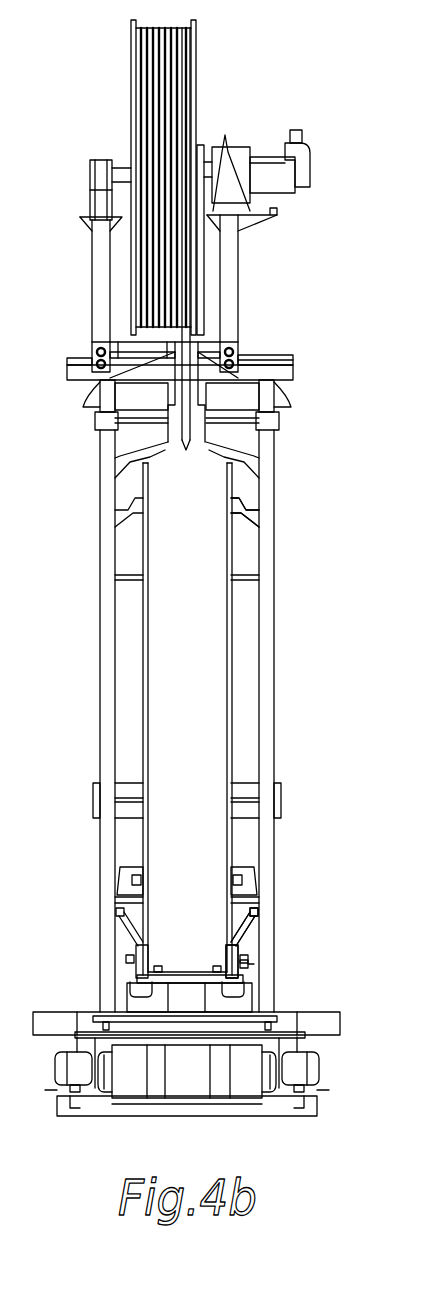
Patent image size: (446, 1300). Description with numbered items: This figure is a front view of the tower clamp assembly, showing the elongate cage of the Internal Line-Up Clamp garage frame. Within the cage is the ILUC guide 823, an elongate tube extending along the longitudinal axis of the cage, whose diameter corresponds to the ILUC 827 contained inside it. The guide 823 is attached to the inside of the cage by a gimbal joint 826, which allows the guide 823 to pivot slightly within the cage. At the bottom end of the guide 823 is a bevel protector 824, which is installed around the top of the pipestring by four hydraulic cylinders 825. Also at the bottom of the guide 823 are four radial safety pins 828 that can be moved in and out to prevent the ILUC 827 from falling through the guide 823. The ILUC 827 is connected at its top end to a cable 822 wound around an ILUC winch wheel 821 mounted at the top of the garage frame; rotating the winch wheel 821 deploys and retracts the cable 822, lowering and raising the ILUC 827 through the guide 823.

The ILUC winch wheel 821 is at (196, 60).
The cable 822 is at (192, 395).
The ILUC guide 823 is at (231, 708).
The bevel protector 824 is at (238, 982).
The hydraulic cylinders 825 is at (257, 922).
The gimbal joint 826 is at (252, 512).
The ILUC 827 is at (192, 633).
The radial safety pins 828 is at (243, 965).